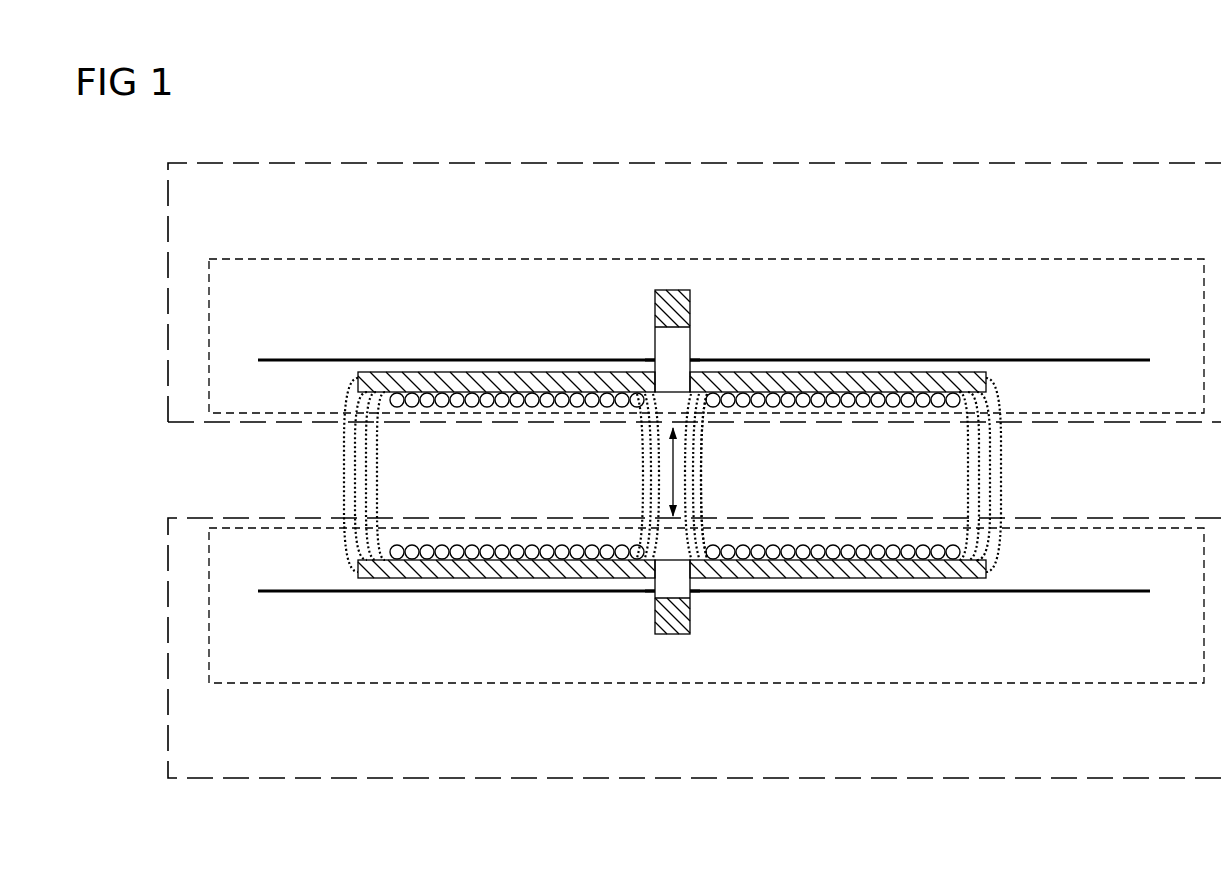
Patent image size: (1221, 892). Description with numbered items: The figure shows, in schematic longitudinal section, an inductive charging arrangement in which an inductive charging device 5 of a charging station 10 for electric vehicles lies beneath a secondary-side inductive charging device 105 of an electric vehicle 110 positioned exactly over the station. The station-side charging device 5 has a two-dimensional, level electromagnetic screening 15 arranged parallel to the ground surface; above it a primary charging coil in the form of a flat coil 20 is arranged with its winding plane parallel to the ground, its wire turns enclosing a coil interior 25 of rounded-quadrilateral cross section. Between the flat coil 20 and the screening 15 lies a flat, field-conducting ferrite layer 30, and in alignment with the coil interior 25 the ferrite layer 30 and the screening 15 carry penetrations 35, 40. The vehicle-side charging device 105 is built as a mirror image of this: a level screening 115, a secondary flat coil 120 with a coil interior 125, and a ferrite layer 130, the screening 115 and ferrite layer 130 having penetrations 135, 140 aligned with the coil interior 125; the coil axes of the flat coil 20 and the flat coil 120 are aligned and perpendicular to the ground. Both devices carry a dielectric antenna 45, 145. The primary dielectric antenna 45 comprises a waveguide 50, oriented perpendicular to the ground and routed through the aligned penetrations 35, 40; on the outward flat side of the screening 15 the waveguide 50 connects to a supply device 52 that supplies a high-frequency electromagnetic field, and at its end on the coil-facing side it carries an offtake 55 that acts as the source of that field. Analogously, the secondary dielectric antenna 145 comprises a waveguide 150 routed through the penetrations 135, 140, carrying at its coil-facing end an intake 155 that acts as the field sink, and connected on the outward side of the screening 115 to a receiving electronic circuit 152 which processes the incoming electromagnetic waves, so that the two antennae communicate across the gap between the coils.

The inductive charging device 5 is at (435, 684).
The charging station 10 is at (1151, 779).
The electromagnetic screening 15 is at (326, 592).
The flat coil 20 is at (428, 548).
The coil interior 25 is at (647, 547).
The ferrite layer 30 is at (977, 580).
The penetration 35 is at (655, 581).
The penetration 40 is at (656, 598).
The dielectric antenna 45 is at (692, 579).
The waveguide 50 is at (676, 587).
The supply device 52 is at (672, 620).
The offtake 55 is at (656, 530).
The inductive charging device 105 is at (1028, 258).
The electric vehicle 110 is at (1040, 162).
The screening 115 is at (427, 357).
The flat coil 120 is at (967, 406).
The coil interior 125 is at (639, 403).
The ferrite layer 130 is at (827, 369).
The penetration 135 is at (655, 361).
The penetration 140 is at (691, 357).
The dielectric antenna 145 is at (679, 393).
The waveguide 150 is at (684, 336).
The receiving electronic circuit 152 is at (688, 289).
The intake 155 is at (690, 420).